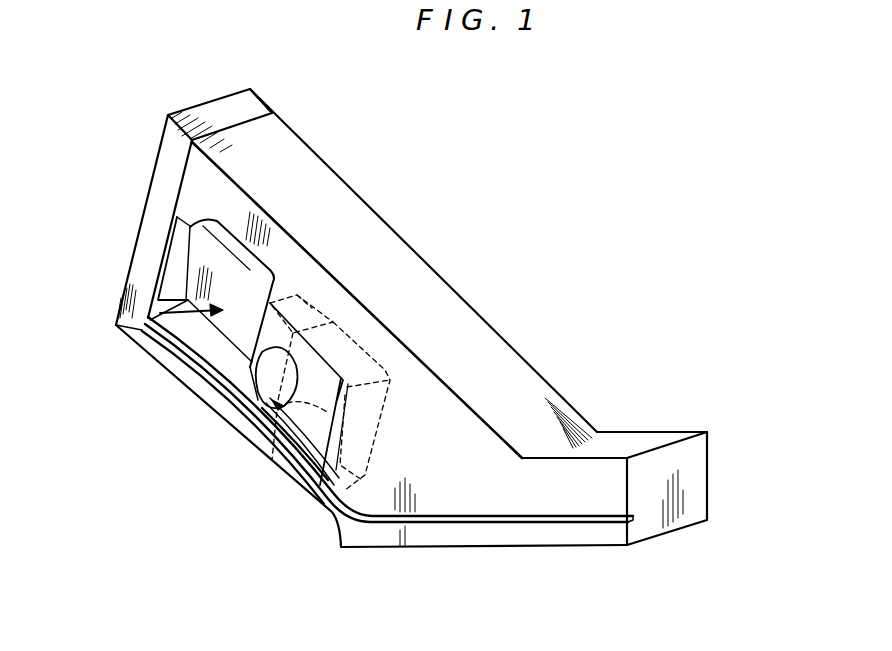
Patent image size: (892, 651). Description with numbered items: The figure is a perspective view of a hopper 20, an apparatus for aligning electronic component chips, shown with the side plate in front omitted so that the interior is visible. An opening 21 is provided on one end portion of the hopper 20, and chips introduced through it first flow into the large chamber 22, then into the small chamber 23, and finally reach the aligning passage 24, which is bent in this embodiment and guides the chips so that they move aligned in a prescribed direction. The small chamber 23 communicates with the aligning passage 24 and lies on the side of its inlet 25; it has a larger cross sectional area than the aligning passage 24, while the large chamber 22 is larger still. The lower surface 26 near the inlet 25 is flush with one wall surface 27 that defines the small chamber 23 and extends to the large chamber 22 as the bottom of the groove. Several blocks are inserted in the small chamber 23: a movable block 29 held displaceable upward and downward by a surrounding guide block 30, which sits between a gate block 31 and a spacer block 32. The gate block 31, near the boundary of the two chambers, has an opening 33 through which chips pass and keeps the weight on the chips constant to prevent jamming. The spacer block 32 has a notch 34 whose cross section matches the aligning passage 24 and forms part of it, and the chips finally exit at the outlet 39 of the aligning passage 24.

The hopper 20 is at (528, 292).
The opening 21 is at (184, 270).
The large chamber 22 is at (165, 369).
The small chamber 23 is at (286, 411).
The aligning passage 24 is at (493, 524).
The inlet 25 is at (336, 512).
The lower surface 26 is at (337, 514).
The wall surface 27 is at (303, 447).
The movable block 29 is at (300, 455).
The guide block 30 is at (318, 372).
The gate block 31 is at (266, 350).
The spacer block 32 is at (358, 360).
The opening 33 is at (238, 397).
The notch 34 is at (318, 486).
The outlet 39 is at (633, 518).